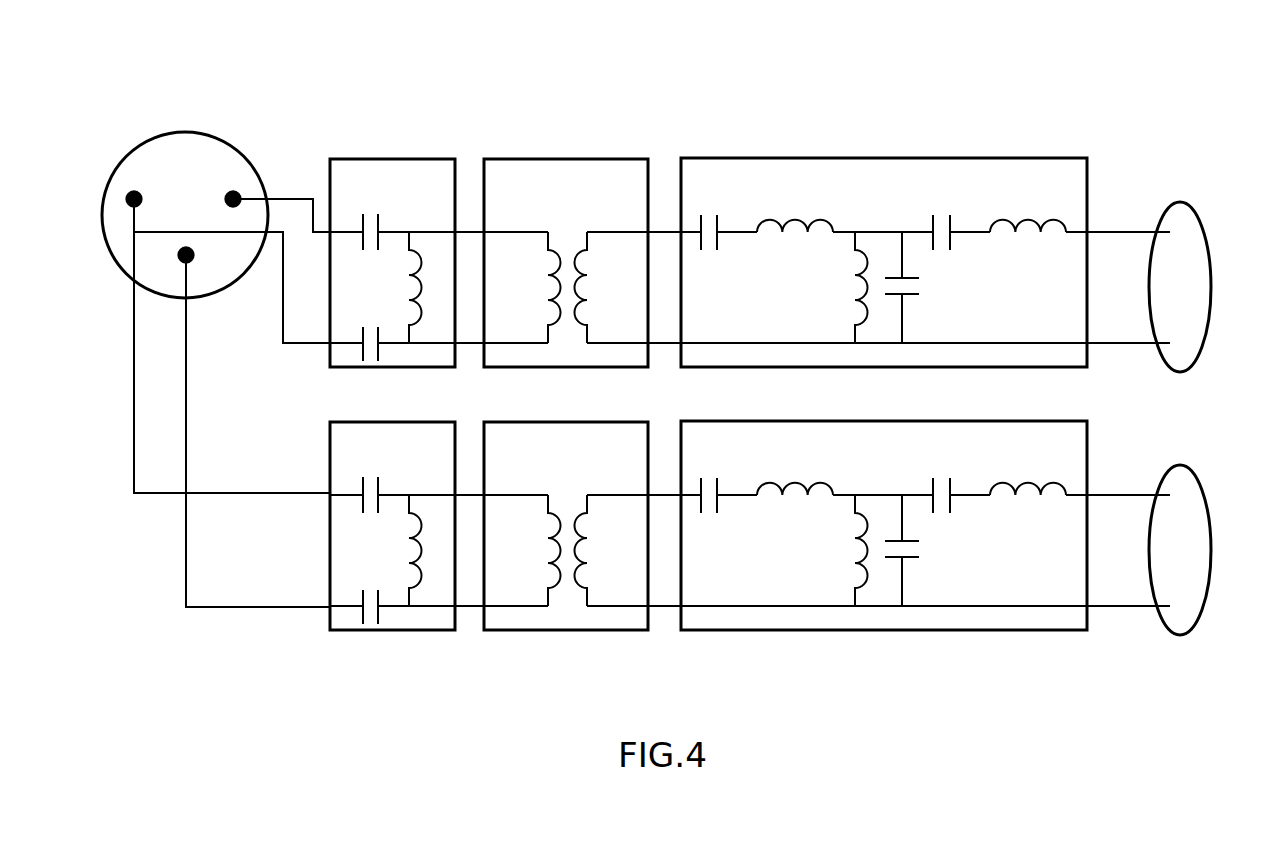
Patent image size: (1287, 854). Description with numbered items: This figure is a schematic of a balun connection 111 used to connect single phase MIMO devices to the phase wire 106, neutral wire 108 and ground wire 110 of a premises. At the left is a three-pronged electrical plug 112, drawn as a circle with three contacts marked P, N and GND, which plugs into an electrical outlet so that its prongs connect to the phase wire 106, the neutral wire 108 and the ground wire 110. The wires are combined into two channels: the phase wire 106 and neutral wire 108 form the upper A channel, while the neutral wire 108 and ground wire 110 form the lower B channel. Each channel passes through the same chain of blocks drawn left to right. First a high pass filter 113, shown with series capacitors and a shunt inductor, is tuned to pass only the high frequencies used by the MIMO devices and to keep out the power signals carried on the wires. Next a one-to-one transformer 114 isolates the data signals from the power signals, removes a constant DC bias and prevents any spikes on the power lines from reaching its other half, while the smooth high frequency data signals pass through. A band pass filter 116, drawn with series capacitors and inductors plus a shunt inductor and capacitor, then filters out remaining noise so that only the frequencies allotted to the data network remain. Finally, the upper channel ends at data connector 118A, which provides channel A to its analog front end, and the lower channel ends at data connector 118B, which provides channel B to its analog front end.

The phase wire 106 is at (253, 198).
The neutral wire 108 is at (133, 217).
The ground wire 110 is at (186, 337).
The balun connection 111 is at (895, 62).
The three-pronged electrical plug 112 is at (212, 132).
The high pass filter 113 is at (388, 158).
The transformer 114 is at (572, 158).
The band pass filter 116 is at (943, 157).
The data connector 118A is at (1193, 212).
The data connector 118B is at (1196, 574).